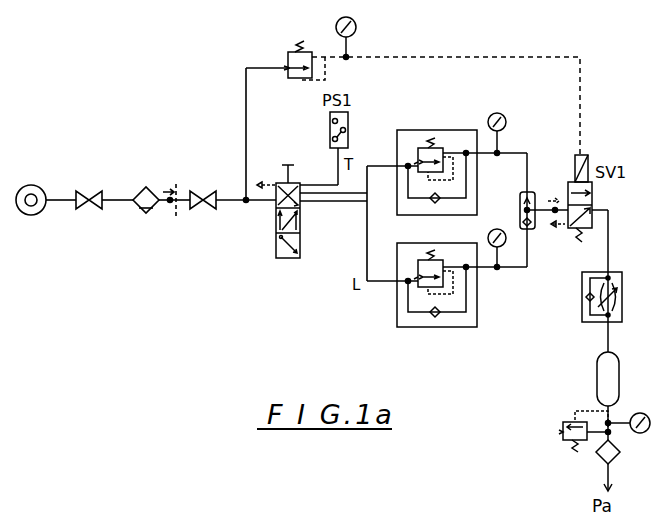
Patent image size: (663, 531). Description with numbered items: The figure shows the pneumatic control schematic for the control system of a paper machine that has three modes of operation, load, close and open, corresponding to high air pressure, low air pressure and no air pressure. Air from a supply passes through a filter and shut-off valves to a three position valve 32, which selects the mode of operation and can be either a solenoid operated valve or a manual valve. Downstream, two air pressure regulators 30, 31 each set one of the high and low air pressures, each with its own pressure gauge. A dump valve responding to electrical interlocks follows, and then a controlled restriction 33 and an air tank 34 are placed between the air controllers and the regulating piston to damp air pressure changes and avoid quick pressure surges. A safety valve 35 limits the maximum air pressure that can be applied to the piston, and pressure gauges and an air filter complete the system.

The air pressure regulator 30 is at (477, 318).
The air pressure regulator 31 is at (452, 146).
The three position valve 32 is at (278, 243).
The controlled restriction 33 is at (623, 302).
The air tank 34 is at (612, 378).
The safety valve 35 is at (569, 413).